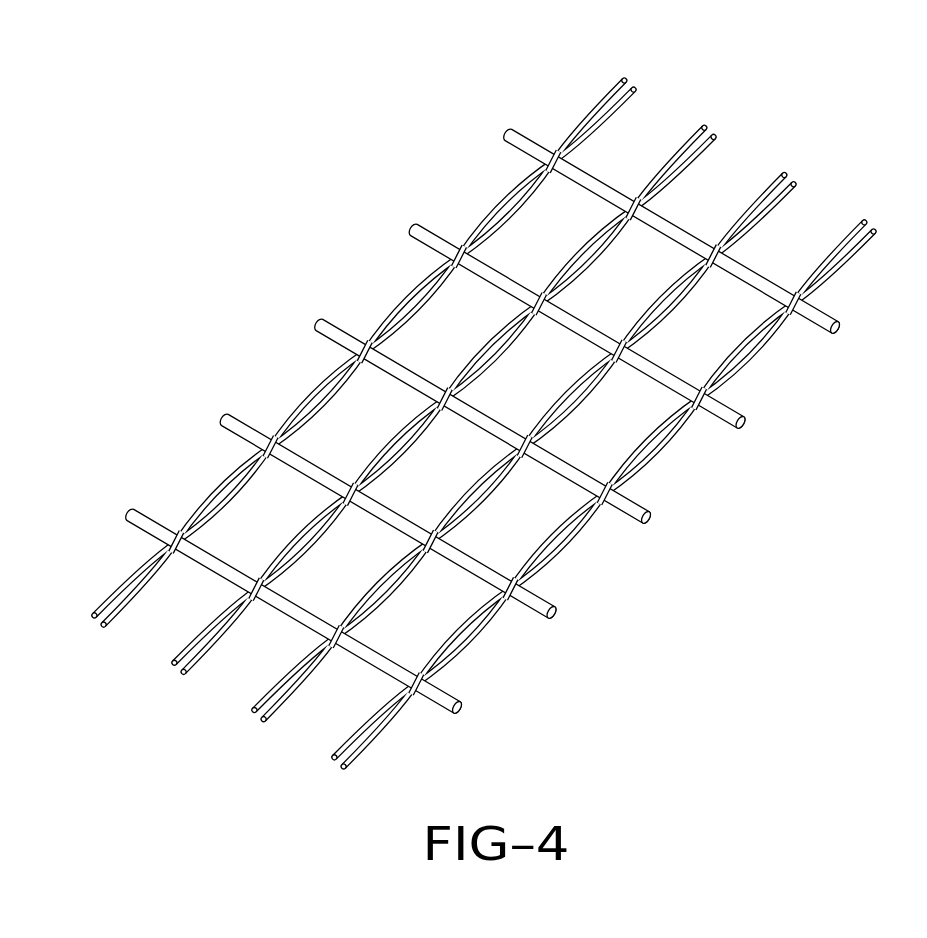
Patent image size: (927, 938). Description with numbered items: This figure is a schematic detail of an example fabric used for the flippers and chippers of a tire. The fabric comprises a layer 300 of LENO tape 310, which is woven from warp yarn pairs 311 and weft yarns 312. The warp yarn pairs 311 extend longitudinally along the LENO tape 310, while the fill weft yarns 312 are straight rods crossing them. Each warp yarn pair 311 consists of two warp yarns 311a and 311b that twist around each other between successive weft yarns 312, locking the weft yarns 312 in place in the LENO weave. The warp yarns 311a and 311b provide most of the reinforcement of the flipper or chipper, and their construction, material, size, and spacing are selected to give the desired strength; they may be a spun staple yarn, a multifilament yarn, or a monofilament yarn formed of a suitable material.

The layer 300 is at (240, 348).
The LENO tape 310 is at (859, 138).
The warp yarn pairs 311 is at (460, 399).
The warp yarn 311a is at (608, 93).
The warp yarn 311b is at (628, 97).
The weft yarns 312 is at (408, 230).